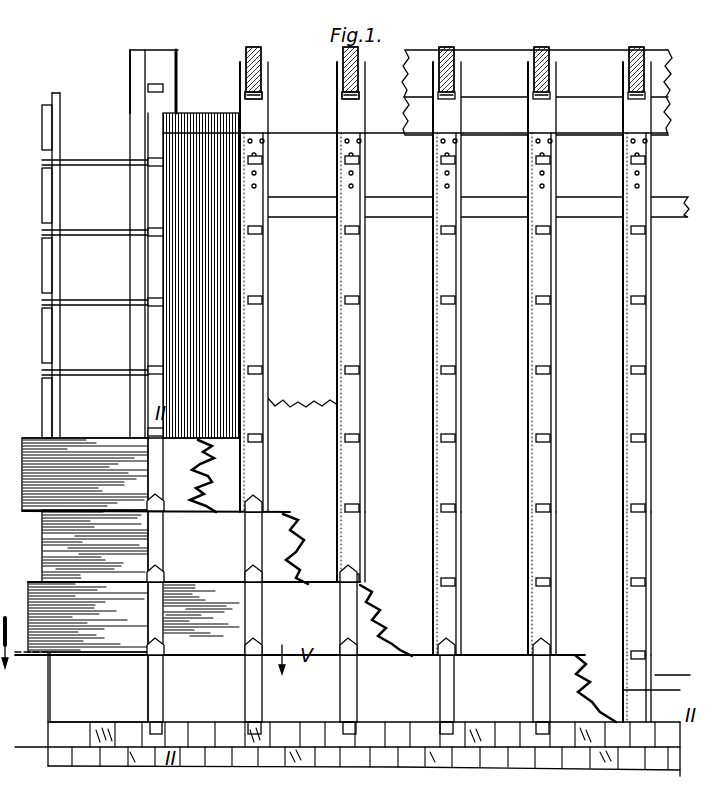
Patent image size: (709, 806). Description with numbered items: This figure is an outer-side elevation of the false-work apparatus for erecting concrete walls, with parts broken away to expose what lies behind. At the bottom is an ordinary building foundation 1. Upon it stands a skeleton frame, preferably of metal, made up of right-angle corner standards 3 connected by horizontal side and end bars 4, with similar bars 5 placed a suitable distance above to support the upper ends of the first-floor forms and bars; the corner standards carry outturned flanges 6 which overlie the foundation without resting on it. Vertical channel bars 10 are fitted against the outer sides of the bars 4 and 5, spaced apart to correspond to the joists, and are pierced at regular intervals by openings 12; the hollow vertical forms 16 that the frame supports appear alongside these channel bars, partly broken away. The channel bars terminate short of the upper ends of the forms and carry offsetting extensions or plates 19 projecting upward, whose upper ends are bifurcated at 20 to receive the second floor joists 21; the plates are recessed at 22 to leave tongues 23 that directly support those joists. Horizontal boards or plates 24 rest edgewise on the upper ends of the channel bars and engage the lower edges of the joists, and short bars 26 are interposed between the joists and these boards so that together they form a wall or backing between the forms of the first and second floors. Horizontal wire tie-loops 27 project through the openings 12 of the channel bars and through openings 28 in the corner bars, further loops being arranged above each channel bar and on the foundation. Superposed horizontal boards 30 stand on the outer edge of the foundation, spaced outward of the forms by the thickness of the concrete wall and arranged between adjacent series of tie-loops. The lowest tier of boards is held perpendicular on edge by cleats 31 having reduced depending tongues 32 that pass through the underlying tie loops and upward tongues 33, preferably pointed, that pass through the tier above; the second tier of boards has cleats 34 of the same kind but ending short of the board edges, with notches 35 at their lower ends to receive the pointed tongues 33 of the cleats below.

The foundation 1 is at (48, 752).
The corner standards 3 is at (153, 52).
The horizontal side and end bars 4 is at (668, 692).
The upper horizontal bars 5 is at (607, 215).
The outturned flanges 6 is at (130, 58).
The channel bars 10 is at (345, 328).
The openings 12 is at (650, 514).
The wall panel 16 is at (212, 113).
The offsetting extensions or plates 19 is at (338, 125).
The bifurcated upper ends 20 is at (262, 68).
The second floor joists 21 is at (255, 52).
The recesses 22 is at (342, 96).
The tongues 23 is at (348, 100).
The horizontal boards or plates 24 is at (537, 116).
The short bars 26 is at (440, 55).
The wire tie-loops 27 is at (150, 167).
The openings in corner bars 28 is at (152, 158).
The boards 30 is at (62, 198).
The cleats 31 is at (150, 689).
The reduced depending tongues 32 is at (236, 728).
The upward tongues 33 is at (163, 578).
The cleats of second tier 34 is at (150, 598).
The notches 35 is at (152, 641).